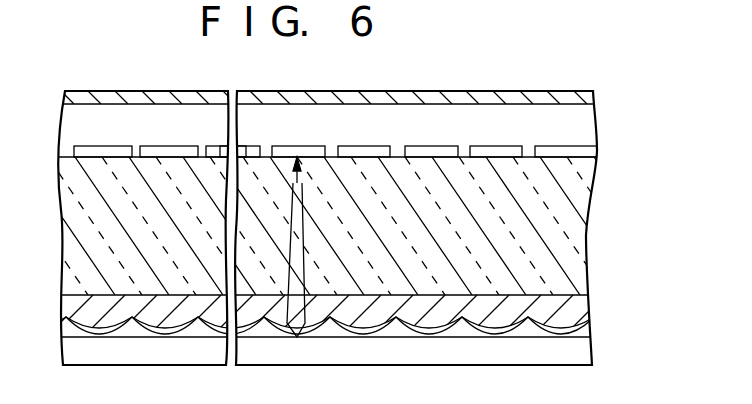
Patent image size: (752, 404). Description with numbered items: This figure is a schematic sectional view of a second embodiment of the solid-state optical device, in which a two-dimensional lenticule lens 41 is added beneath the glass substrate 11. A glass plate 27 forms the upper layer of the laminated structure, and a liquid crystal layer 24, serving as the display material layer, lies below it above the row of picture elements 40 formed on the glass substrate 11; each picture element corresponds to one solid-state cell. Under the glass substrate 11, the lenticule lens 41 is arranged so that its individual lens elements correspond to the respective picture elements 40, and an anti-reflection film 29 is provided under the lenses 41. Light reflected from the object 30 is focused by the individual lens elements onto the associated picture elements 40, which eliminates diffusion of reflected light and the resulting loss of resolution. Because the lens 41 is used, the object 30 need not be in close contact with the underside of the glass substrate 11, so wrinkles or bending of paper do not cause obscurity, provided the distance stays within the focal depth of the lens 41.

The glass plate 27 is at (597, 93).
The liquid crystal layer 24 is at (594, 128).
The picture elements 40 is at (98, 150).
The glass substrate 11 is at (588, 220).
The two-dimensional lenticule lens 41 is at (592, 300).
The anti-reflection film 29 is at (592, 322).
The object 30 is at (591, 353).